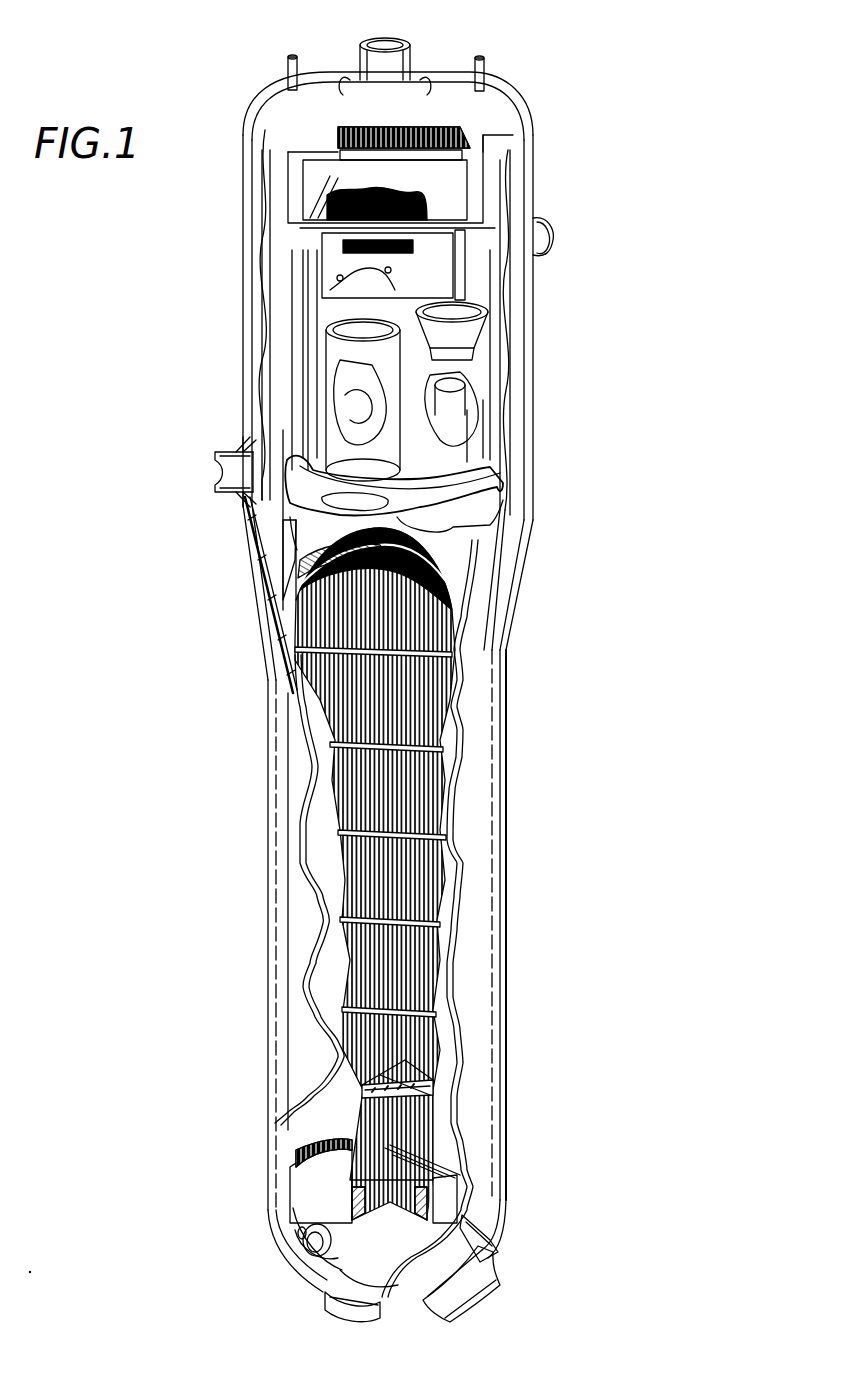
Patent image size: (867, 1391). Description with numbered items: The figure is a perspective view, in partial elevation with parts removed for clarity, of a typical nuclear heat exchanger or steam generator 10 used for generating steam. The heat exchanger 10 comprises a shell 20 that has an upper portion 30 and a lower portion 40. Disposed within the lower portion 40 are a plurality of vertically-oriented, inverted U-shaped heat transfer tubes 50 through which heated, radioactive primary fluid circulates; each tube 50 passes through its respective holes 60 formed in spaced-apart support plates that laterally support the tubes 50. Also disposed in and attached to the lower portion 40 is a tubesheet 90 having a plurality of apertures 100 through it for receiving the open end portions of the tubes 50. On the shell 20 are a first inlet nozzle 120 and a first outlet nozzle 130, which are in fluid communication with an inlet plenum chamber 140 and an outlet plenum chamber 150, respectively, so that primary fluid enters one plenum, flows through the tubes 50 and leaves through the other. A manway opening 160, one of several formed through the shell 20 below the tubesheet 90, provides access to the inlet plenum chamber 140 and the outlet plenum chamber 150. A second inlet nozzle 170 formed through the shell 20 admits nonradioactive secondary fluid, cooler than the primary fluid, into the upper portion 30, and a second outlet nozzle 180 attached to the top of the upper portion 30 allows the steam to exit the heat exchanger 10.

The heat exchanger 10 is at (443, 671).
The shell 20 is at (526, 372).
The upper portion 30 is at (535, 522).
The lower portion 40 is at (494, 697).
The heat transfer tubes 50 is at (425, 773).
The holes 60 is at (375, 1085).
The tubesheet 90 is at (448, 1190).
The apertures 100 is at (448, 1224).
The first inlet nozzle 120 is at (327, 1296).
The first outlet nozzle 130 is at (468, 1298).
The inlet plenum chamber 140 is at (300, 1230).
The outlet plenum chamber 150 is at (481, 1268).
The manway opening 160 is at (323, 1250).
The second inlet nozzle 170 is at (224, 452).
The second outlet nozzle 180 is at (395, 40).